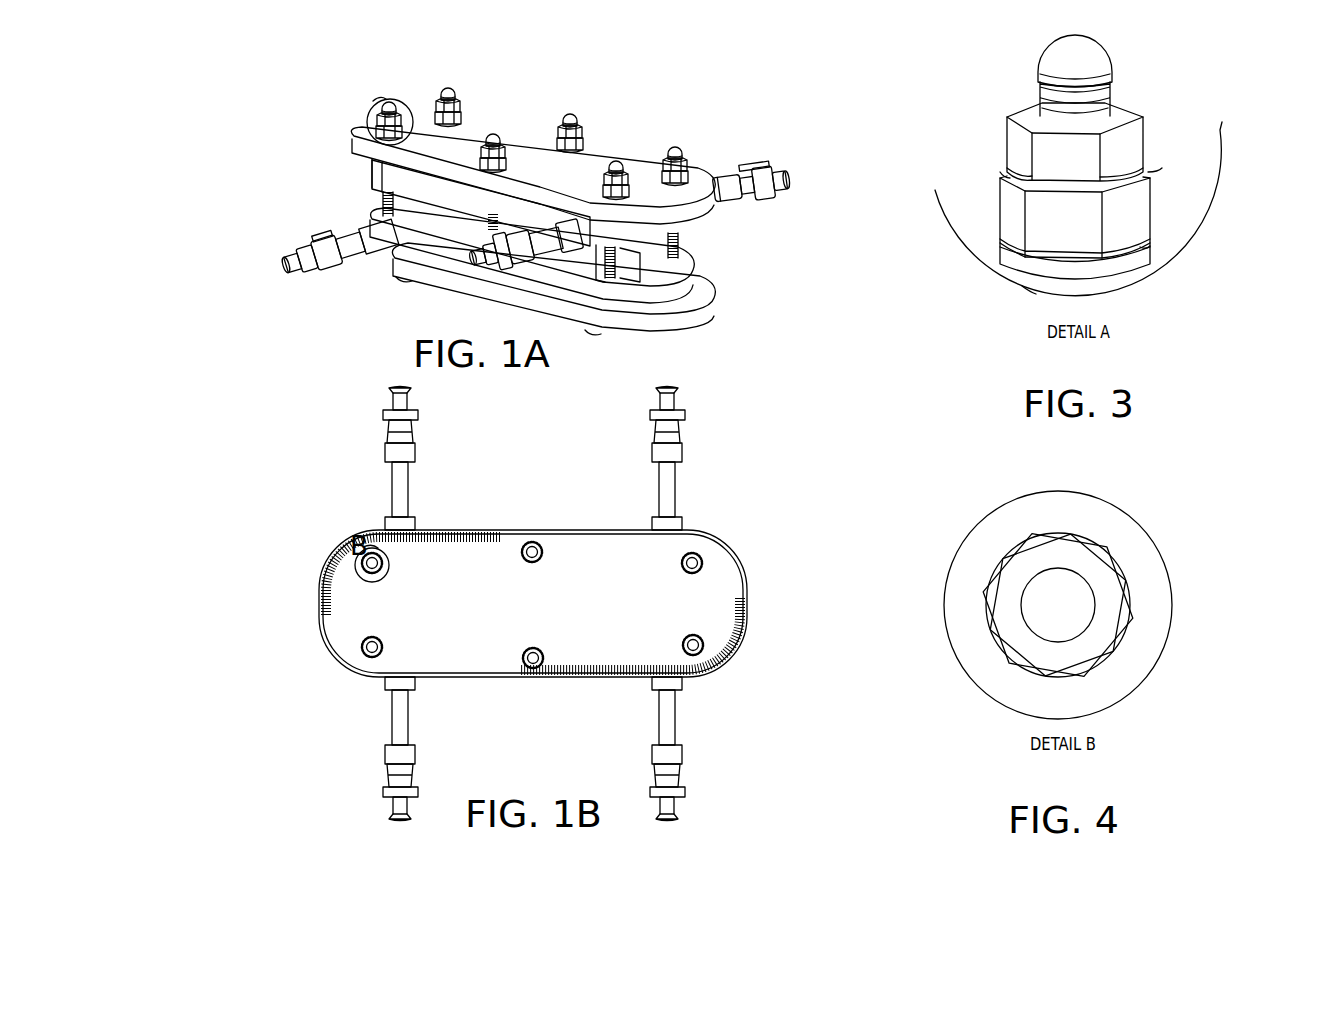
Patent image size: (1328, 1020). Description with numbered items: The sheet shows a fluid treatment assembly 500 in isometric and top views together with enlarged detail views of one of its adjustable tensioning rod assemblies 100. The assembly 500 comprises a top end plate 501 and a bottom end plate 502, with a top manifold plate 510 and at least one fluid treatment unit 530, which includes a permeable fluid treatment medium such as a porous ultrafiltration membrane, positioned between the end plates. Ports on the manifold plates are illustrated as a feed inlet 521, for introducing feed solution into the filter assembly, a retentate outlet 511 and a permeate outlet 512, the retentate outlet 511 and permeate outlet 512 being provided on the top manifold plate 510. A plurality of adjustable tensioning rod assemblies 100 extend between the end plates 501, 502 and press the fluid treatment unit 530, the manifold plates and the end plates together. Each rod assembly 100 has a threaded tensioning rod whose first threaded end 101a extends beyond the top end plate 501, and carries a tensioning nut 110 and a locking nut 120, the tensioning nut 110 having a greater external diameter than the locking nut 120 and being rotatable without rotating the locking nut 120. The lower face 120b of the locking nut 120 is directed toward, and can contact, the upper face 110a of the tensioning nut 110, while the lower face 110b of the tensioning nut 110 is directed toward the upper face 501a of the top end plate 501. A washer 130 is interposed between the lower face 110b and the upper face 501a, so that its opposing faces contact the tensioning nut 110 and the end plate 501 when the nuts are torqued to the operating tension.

In FIG. 1A, the adjustable tensioning rod assembly 100 is at (614, 92).
In FIG. 1B, the adjustable tensioning rod assembly 100 is at (532, 550).
In FIG. 3, the adjustable tensioning rod assembly 100 is at (1283, 56).
In FIG. 3, the first threaded end 101a is at (1107, 93).
In FIG. 1A, the tensioning nut 110 is at (583, 145).
In FIG. 3, the tensioning nut 110 is at (1154, 236).
In FIG. 4, the tensioning nut 110 is at (1107, 547).
In FIG. 3, the upper face of the tensioning nut 110a is at (1162, 170).
In FIG. 3, the lower face of the tensioning nut 110b is at (1143, 247).
In FIG. 1A, the locking nut 120 is at (442, 104).
In FIG. 3, the locking nut 120 is at (1081, 165).
In FIG. 4, the locking nut 120 is at (1113, 573).
In FIG. 3, the lower face of the locking nut 120b is at (1007, 165).
In FIG. 1A, the washer 130 is at (470, 113).
In FIG. 3, the washer 130 is at (1110, 267).
In FIG. 4, the washer 130 is at (1082, 537).
In FIG. 1A, the fluid treatment assembly 500 is at (263, 186).
In FIG. 1A, the top (first) end plate 501 is at (566, 185).
In FIG. 1B, the top (first) end plate 501 is at (402, 546).
In FIG. 1A, the upper face of the first end plate 501a is at (697, 182).
In FIG. 3, the upper face of the first end plate 501a is at (1017, 282).
In FIG. 4, the upper face of the first end plate 501a is at (990, 550).
In FIG. 1A, the bottom (second) end plate 502 is at (697, 308).
In FIG. 1A, the top (first) manifold plate 510 is at (383, 181).
In FIG. 1A, the retentate outlet 511 is at (787, 182).
In FIG. 1B, the retentate outlet 511 is at (657, 394).
In FIG. 1A, the permeate outlet 512 is at (473, 258).
In FIG. 1B, the permeate outlet 512 is at (678, 800).
In FIG. 1A, the feed inlet 521 is at (286, 263).
In FIG. 1B, the feed inlet 521 is at (390, 797).
In FIG. 1A, the fluid treatment unit 530 is at (657, 250).